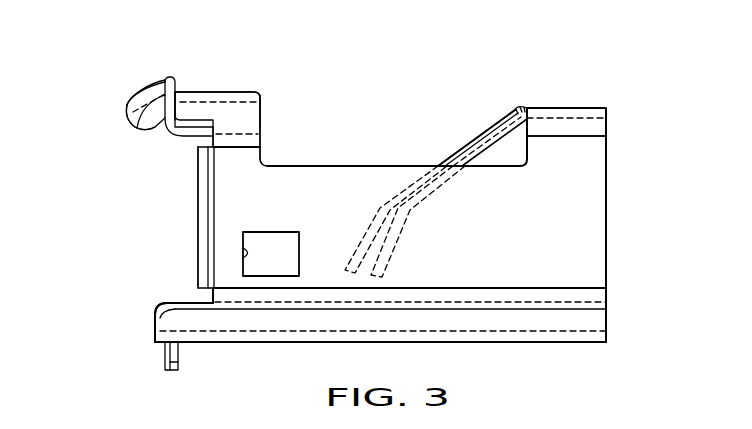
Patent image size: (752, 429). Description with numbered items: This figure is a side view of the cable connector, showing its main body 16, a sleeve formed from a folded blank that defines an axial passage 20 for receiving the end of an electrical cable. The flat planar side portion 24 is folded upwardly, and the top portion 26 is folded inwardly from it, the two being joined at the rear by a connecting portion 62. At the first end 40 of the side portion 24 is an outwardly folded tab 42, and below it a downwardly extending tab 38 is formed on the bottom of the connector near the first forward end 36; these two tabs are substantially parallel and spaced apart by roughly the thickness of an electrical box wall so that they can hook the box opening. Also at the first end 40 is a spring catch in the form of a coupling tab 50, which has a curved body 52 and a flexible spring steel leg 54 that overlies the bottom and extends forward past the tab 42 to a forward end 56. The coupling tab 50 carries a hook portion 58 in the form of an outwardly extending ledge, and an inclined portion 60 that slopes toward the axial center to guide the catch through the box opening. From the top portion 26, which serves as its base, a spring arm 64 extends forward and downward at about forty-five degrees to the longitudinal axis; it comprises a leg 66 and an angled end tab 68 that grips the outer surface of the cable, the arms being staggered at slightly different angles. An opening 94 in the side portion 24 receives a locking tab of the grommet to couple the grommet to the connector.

The main body 16 is at (606, 168).
The axial passage 20 is at (168, 225).
The side portion 24 is at (585, 214).
The top portion 26 is at (560, 108).
The first forward end 36 is at (155, 337).
The tab 38 is at (178, 365).
The first end 40 is at (225, 186).
The tab 42 is at (200, 172).
The coupling tab 50 is at (128, 100).
The body 52 is at (246, 110).
The leg 54 is at (195, 108).
The forward end 56 is at (128, 115).
The hook portion 58 is at (177, 80).
The inclined portion 60 is at (157, 87).
The connecting portion 62 is at (606, 128).
The spring arm 64 is at (476, 135).
The leg 66 is at (444, 160).
The angled end tab 68 is at (393, 246).
The opening 94 is at (246, 253).